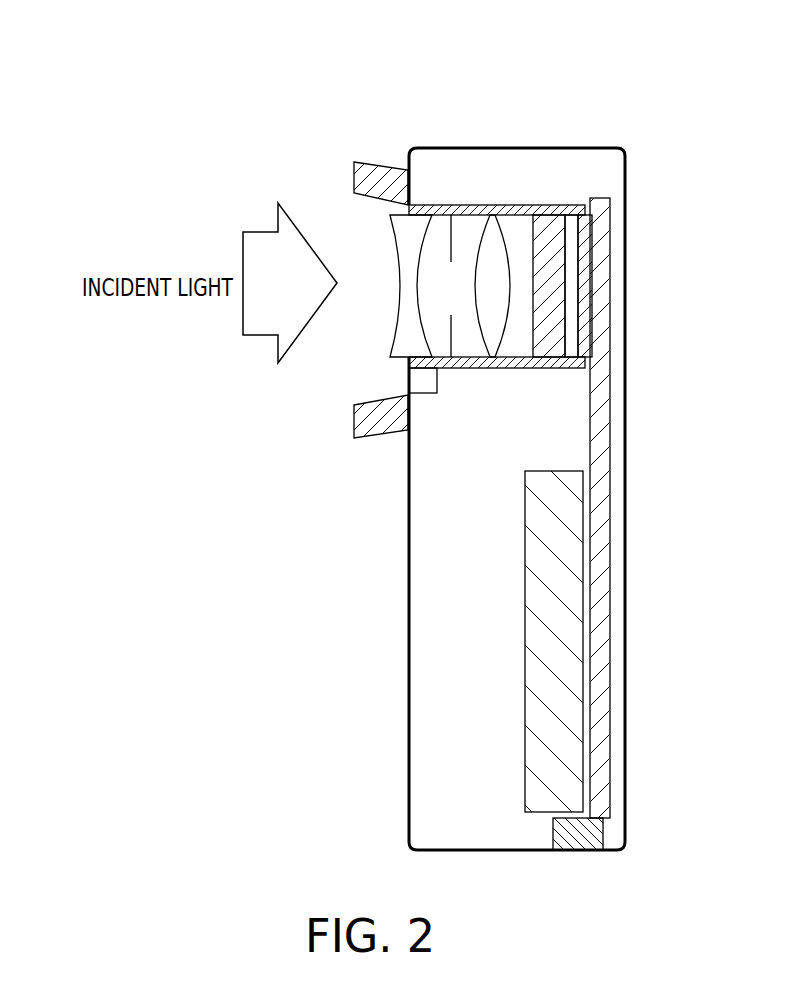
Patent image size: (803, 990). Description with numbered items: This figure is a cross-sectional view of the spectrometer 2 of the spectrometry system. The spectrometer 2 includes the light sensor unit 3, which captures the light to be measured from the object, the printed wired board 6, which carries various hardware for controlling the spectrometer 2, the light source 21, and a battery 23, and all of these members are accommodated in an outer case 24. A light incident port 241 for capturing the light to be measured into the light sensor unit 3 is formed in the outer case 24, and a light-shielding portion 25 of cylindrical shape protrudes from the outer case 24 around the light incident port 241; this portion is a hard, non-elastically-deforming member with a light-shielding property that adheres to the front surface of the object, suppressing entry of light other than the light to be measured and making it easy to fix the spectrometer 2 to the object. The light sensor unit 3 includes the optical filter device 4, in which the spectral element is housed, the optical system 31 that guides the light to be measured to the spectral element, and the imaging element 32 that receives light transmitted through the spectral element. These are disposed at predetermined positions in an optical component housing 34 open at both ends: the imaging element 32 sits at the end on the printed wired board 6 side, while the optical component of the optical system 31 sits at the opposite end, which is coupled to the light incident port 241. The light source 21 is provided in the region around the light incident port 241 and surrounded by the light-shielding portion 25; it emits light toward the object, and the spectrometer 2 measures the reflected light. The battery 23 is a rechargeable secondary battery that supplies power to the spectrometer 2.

The spectrometer 2 is at (477, 429).
The light sensor unit 3 is at (492, 205).
The optical system 31 is at (498, 240).
The optical component housing 34 is at (515, 210).
The optical filter device 4 is at (547, 210).
The imaging element 32 is at (581, 226).
The printed wired board 6 is at (603, 199).
The light source 21 is at (438, 382).
The battery 23 is at (532, 612).
The outer case 24 is at (408, 622).
The light incident port 241 is at (408, 362).
The light-shielding portion 25 is at (354, 176).